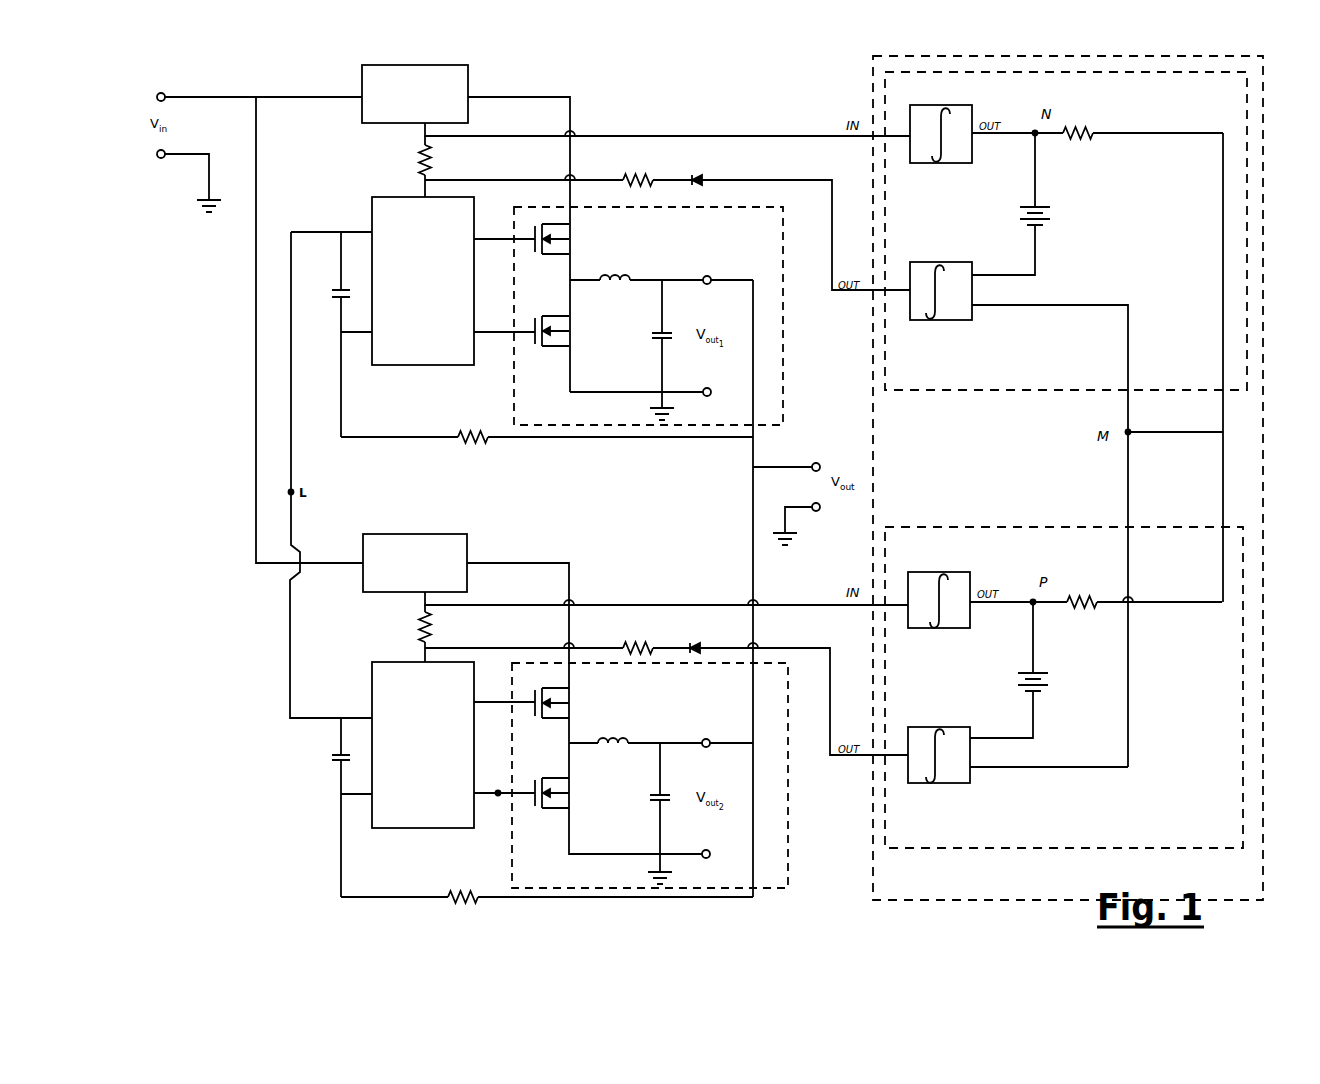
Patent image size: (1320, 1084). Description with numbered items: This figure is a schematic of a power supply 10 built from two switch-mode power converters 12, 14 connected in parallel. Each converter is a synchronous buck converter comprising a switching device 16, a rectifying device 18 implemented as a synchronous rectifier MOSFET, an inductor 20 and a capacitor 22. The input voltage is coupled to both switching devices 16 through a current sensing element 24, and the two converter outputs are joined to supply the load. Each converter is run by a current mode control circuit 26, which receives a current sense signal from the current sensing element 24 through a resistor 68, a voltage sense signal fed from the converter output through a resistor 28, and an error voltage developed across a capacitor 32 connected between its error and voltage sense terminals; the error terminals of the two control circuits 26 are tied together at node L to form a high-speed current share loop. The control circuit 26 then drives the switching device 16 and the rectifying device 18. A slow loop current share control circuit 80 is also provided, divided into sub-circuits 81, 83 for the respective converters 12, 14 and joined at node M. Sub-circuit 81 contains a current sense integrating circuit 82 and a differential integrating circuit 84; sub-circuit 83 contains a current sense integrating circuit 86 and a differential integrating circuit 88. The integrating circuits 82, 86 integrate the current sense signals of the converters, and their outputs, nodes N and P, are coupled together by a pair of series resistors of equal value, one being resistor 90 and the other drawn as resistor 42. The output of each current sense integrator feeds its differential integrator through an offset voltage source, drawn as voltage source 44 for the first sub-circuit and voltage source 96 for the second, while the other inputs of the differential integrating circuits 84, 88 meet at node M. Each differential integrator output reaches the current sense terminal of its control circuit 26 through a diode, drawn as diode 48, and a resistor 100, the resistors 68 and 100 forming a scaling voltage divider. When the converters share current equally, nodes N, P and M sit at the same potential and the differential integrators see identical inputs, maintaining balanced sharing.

The power supply 10 is at (180, 674).
The first power converter 12 is at (784, 356).
The second power converter 14 is at (788, 816).
The switching device 16 is at (577, 241).
The rectifying device 18 is at (578, 333).
The inductor 20 is at (607, 272).
The capacitor 22 is at (651, 332).
The current sensing element 24 is at (470, 74).
The control circuit 26 is at (418, 367).
The resistor 28 is at (461, 443).
The capacitor 32 is at (326, 310).
The resistor 42 is at (1072, 597).
The voltage source 44 is at (1064, 214).
The diode 48 is at (705, 170).
The resistor 68 is at (431, 160).
The slow loop current share control circuit 80 is at (1268, 228).
The slow loop current share control sub-circuit 81 is at (972, 393).
The integrating circuit 82 is at (928, 165).
The slow loop current share control sub-circuit 83 is at (937, 850).
The integrating circuit 84 is at (950, 322).
The integrating circuit 86 is at (948, 630).
The integrating circuit 88 is at (935, 728).
The resistor 90 is at (1082, 155).
The voltage source 96 is at (1023, 670).
The resistor 100 is at (640, 172).